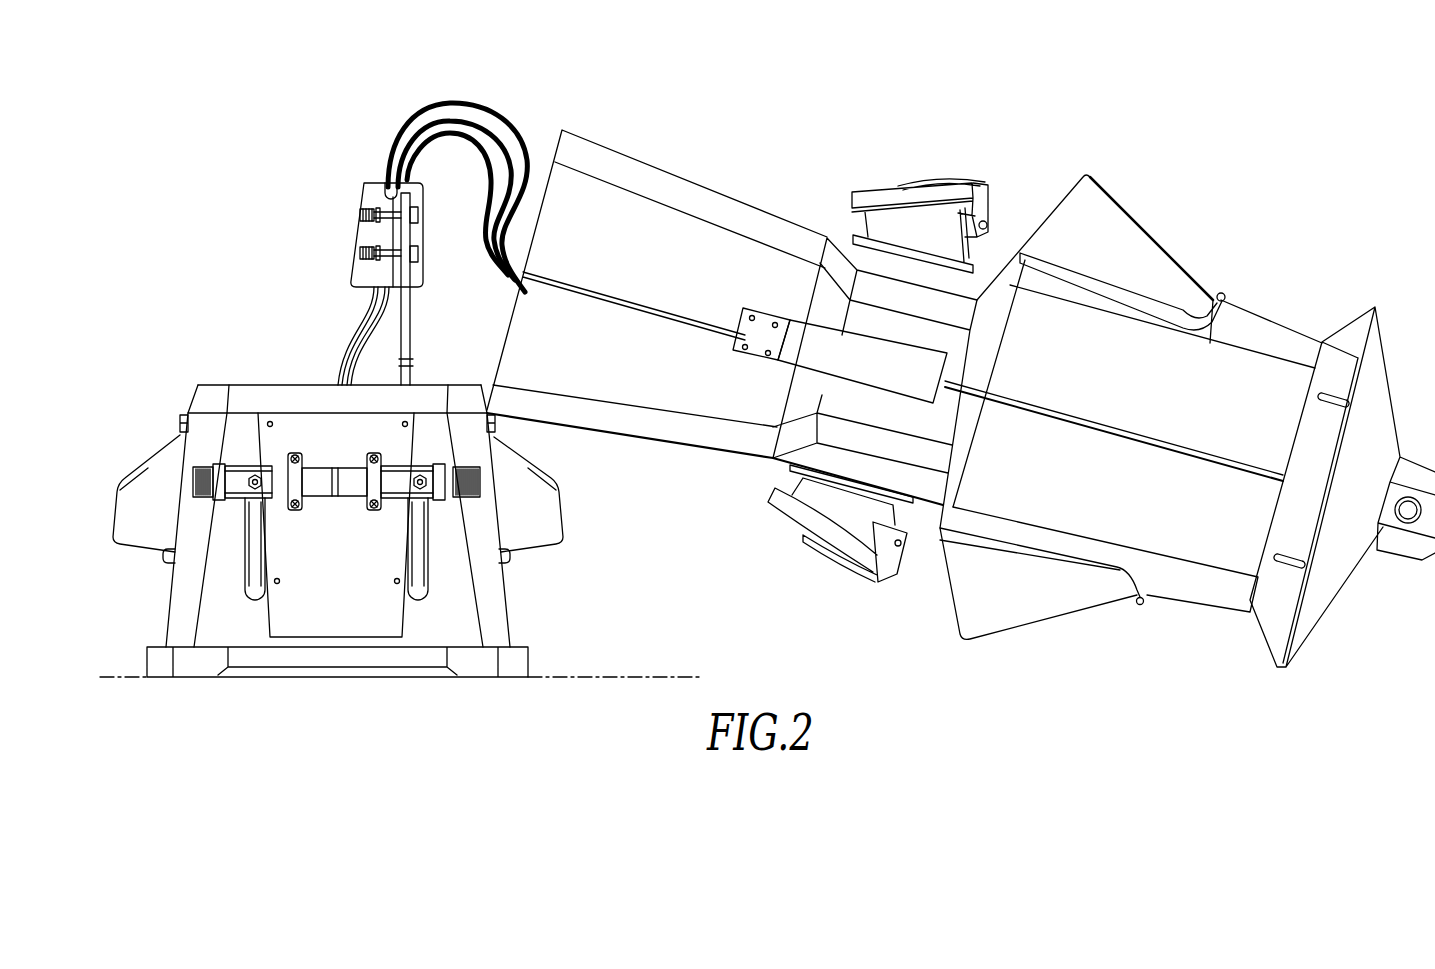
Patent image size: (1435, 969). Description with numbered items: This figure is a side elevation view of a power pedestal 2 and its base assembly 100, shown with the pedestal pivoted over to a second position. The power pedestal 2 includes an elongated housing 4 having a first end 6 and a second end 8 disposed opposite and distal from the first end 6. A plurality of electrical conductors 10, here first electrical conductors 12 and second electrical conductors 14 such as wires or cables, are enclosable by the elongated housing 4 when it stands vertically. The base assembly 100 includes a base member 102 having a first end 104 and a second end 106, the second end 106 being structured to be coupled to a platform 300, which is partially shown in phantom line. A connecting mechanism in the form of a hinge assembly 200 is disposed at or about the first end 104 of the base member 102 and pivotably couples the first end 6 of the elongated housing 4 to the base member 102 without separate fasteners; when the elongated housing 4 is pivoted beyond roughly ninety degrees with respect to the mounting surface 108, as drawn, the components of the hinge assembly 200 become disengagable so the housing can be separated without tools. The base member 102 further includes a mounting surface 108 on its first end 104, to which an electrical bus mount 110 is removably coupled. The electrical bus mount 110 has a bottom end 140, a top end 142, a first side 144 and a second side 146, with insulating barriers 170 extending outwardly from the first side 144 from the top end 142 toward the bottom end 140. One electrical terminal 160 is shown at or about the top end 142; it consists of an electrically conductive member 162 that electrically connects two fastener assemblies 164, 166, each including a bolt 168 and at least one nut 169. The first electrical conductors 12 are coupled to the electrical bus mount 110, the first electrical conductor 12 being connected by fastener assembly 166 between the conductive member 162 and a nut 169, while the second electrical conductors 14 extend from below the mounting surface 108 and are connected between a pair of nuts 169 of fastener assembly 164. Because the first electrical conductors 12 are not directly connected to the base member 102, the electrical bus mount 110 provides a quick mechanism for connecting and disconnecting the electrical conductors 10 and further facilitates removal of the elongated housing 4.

The power pedestal 2 is at (622, 561).
The elongated housing 4 is at (670, 220).
The first end 6 is at (575, 128).
The second end 8 is at (1415, 420).
The electrical conductors 10 is at (393, 127).
The first electrical conductors 12 is at (450, 102).
The second electrical conductors 14 is at (353, 365).
The base assembly 100 is at (190, 393).
The base member 102 is at (505, 590).
The first end 104 is at (195, 385).
The second end 106 is at (540, 662).
The mounting surface 108 is at (265, 382).
The electrical bus mount 110 is at (420, 292).
The bottom end 140 is at (428, 373).
The top end 142 is at (357, 187).
The first side 144 is at (393, 333).
The second side 146 is at (420, 362).
The electrical terminal 160 is at (367, 237).
The electrically conductive member 162 is at (397, 237).
The fastener assembly 164 is at (347, 257).
The fastener assembly 166 is at (355, 207).
The bolt 168 is at (417, 253).
The nut 169 is at (377, 213).
The insulating barriers 170 is at (392, 193).
The hinge assembly 200 is at (528, 437).
The platform 300 is at (107, 672).